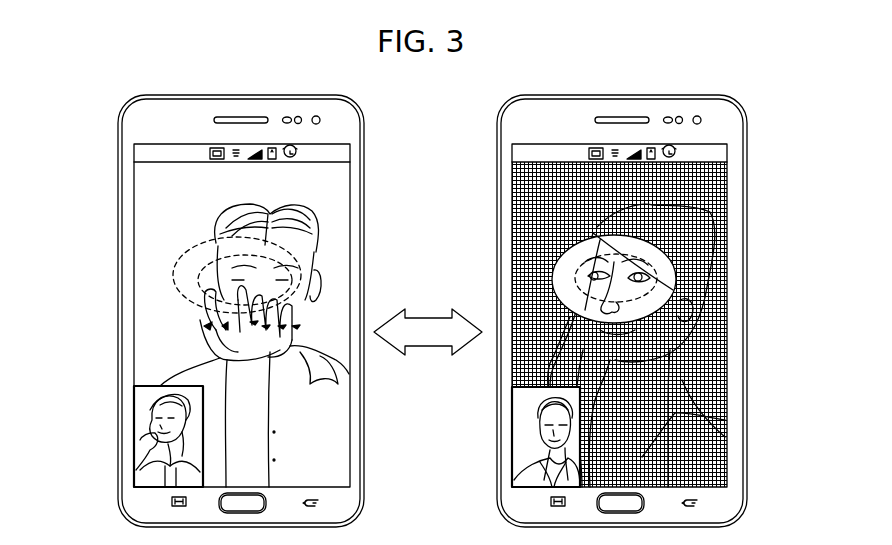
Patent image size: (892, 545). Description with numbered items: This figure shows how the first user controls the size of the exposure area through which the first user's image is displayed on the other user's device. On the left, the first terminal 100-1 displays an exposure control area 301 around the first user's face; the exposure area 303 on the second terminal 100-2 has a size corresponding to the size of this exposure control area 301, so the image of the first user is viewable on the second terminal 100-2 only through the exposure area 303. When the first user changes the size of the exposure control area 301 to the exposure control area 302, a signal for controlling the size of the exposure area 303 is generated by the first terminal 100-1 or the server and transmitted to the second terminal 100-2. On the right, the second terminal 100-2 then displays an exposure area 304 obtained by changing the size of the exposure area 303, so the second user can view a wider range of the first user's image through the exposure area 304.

The first terminal 100-1 is at (298, 95).
The second terminal 100-2 is at (678, 95).
The exposure control area 301 is at (197, 273).
The exposure control area 302 is at (200, 313).
The exposure area 303 is at (677, 283).
The exposure area 304 is at (657, 255).